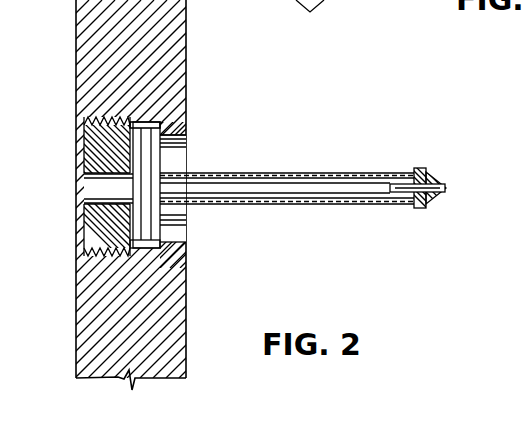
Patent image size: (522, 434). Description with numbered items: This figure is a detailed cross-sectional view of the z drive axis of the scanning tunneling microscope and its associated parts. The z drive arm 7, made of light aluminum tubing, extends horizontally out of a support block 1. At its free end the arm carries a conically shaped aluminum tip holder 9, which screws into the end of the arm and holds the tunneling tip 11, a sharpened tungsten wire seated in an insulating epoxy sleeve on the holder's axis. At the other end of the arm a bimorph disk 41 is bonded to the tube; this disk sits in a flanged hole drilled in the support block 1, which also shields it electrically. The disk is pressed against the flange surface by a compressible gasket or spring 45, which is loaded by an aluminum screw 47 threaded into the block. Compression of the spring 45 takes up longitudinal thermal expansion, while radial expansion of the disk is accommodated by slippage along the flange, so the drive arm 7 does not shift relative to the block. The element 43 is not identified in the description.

The support block 1 is at (177, 76).
The z drive arm 7 is at (335, 172).
The tip holder 9 is at (428, 171).
The tunneling tip 11 is at (447, 188).
The bimorph disk 41 is at (153, 164).
The seal 43 is at (155, 262).
The compressible gasket or spring 45 is at (86, 140).
The screw 47 is at (95, 219).